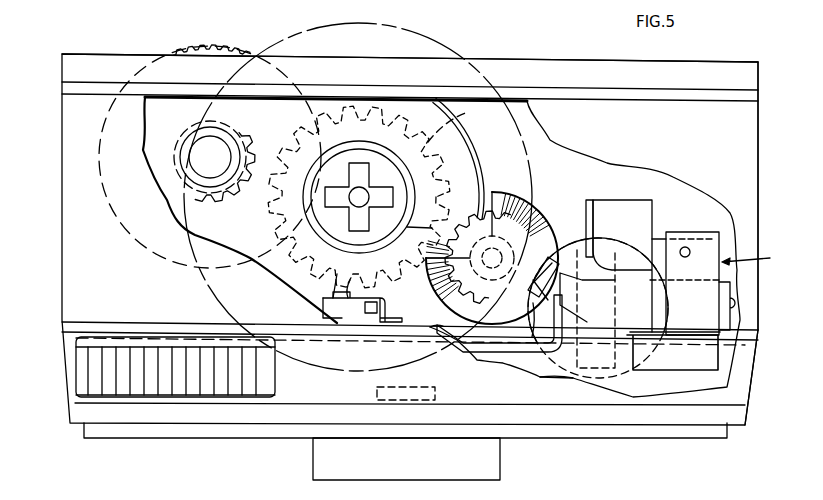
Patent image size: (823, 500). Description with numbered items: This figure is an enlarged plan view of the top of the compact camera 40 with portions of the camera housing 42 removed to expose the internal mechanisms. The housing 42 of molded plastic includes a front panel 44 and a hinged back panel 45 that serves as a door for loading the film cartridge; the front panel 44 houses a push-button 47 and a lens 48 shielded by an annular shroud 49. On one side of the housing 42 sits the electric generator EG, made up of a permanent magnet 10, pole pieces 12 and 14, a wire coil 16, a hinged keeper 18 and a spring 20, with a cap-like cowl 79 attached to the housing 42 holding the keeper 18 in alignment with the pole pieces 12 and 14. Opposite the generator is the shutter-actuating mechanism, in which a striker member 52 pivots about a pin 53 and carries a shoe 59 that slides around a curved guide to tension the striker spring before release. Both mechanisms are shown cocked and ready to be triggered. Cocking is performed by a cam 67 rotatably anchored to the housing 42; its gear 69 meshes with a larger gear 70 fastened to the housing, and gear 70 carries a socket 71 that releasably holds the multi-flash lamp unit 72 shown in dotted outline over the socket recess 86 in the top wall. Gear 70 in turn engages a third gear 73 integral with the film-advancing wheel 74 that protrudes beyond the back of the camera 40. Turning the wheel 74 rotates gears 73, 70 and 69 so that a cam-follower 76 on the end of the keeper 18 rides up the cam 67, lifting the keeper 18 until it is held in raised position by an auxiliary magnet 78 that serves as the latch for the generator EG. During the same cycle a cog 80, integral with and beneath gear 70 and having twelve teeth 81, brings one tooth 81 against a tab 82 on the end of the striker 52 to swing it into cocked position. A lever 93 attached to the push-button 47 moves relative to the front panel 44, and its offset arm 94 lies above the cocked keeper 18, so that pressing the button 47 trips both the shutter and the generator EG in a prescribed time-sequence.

The permanent magnet 10 is at (668, 364).
The pole piece 12 is at (560, 380).
The pole piece 14 is at (712, 355).
The wire coil 16 is at (632, 356).
The hinged keeper 18 is at (574, 323).
The spring 20 is at (738, 286).
The camera 40 is at (46, 226).
The camera housing 42 is at (758, 153).
The front panel 44 is at (743, 390).
The hinged back panel 45 is at (758, 73).
The push-button 47 is at (82, 385).
The lens 48 is at (393, 400).
The annular shroud 49 is at (320, 465).
The striker member 52 is at (374, 296).
The pin 53 is at (368, 318).
The shoe 59 is at (303, 297).
The cam 67 is at (537, 230).
The gear 69 is at (490, 194).
The gear 70 is at (463, 163).
The socket 71 is at (383, 173).
The multi-flash lamp unit 72 is at (440, 41).
The third gear 73 is at (201, 193).
The film-advancing wheel 74 is at (203, 46).
The cam-follower 76 is at (550, 250).
The auxiliary magnet 78 is at (622, 207).
The cowl 79 is at (702, 247).
The cog 80 is at (272, 266).
The teeth 81 is at (468, 118).
The tab 82 is at (336, 278).
The socket recess 86 is at (435, 227).
The lever 93 is at (503, 345).
The offset arm 94 is at (562, 302).
The electric generator EG is at (805, 265).